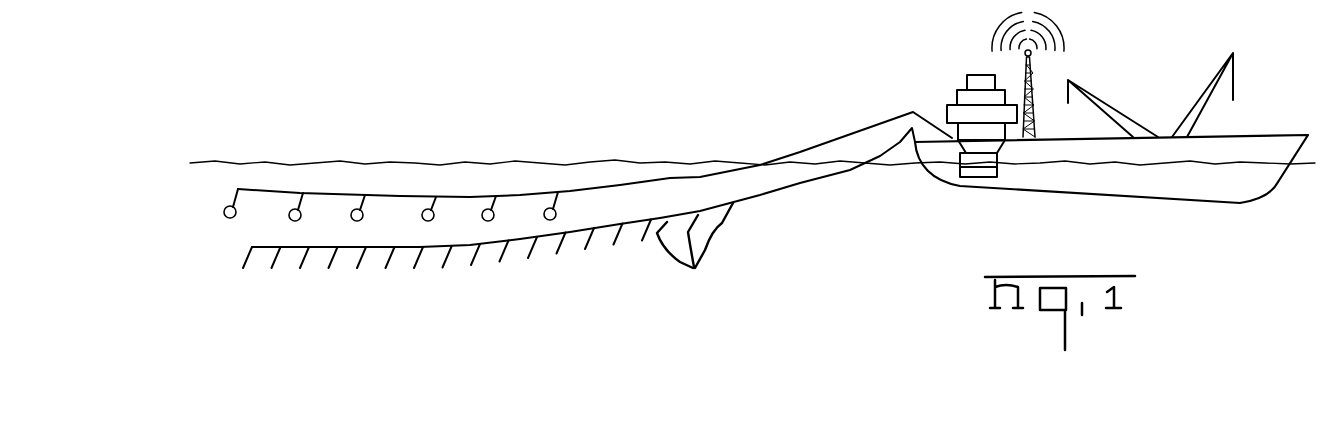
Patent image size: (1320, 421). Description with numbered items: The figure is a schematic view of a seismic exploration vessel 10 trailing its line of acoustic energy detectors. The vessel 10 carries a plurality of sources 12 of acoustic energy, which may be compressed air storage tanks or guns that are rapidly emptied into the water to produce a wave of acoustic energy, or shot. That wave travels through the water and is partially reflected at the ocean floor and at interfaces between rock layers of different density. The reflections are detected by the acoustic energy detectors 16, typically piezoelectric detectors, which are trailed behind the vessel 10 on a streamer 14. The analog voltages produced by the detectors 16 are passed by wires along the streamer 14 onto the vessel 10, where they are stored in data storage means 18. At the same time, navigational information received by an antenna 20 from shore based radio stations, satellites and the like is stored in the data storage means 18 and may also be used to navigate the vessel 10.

The vessel 10 is at (1278, 182).
The sources of acoustic energy 12 is at (847, 138).
The streamer 14 is at (850, 169).
The acoustic energy detectors 16 is at (693, 268).
The data storage means 18 is at (982, 177).
The antenna 20 is at (1069, 75).